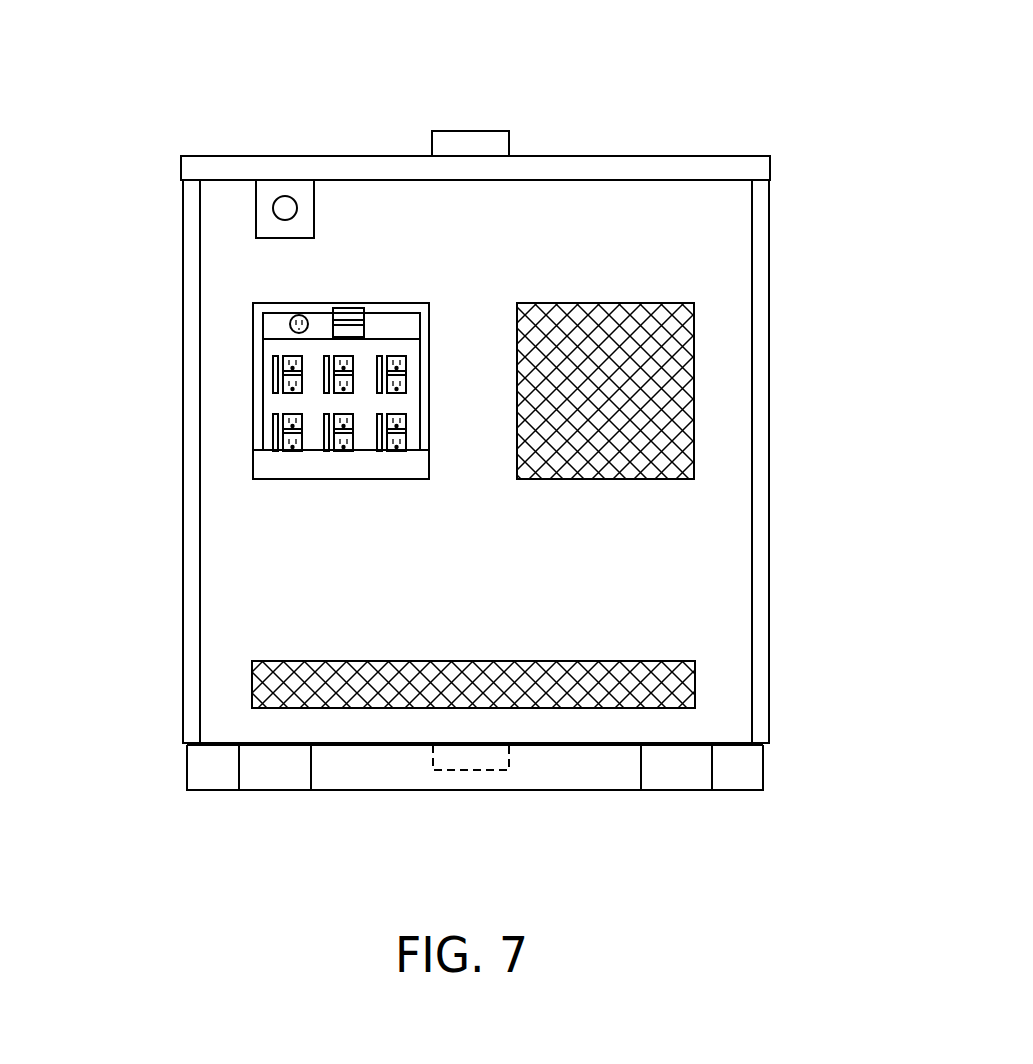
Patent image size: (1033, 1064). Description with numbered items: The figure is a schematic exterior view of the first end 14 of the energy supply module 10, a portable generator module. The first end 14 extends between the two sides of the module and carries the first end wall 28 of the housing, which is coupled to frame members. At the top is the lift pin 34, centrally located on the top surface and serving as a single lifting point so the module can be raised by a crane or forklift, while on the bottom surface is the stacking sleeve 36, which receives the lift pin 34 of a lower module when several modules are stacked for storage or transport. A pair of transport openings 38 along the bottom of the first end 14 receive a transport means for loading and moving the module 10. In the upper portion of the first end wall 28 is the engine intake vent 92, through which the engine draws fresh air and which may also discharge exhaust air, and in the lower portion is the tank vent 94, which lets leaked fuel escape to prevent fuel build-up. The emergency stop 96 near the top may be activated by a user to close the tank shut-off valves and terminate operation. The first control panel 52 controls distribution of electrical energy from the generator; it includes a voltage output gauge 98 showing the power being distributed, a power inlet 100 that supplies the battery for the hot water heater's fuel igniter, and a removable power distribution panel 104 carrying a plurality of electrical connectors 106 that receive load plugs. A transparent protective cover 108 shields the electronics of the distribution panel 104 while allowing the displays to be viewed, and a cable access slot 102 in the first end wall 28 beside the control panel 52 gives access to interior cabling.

The energy supply module 10 is at (200, 72).
The first end 14 is at (708, 584).
The first end wall 28 is at (688, 540).
The lift pin 34 is at (492, 144).
The stacking sleeve 36 is at (475, 756).
The transport openings 38 is at (672, 778).
The first control panel 52 is at (229, 449).
The engine intake vent 92 is at (687, 366).
The tank vent 94 is at (688, 685).
The emergency stop 96 is at (286, 206).
The voltage output gauge 98 is at (345, 320).
The power inlet 100 is at (299, 324).
The cable access slot 102 is at (342, 480).
The removable power distribution panel 104 is at (346, 402).
The electrical connectors 106 is at (295, 418).
The transparent protective cover 108 is at (253, 308).